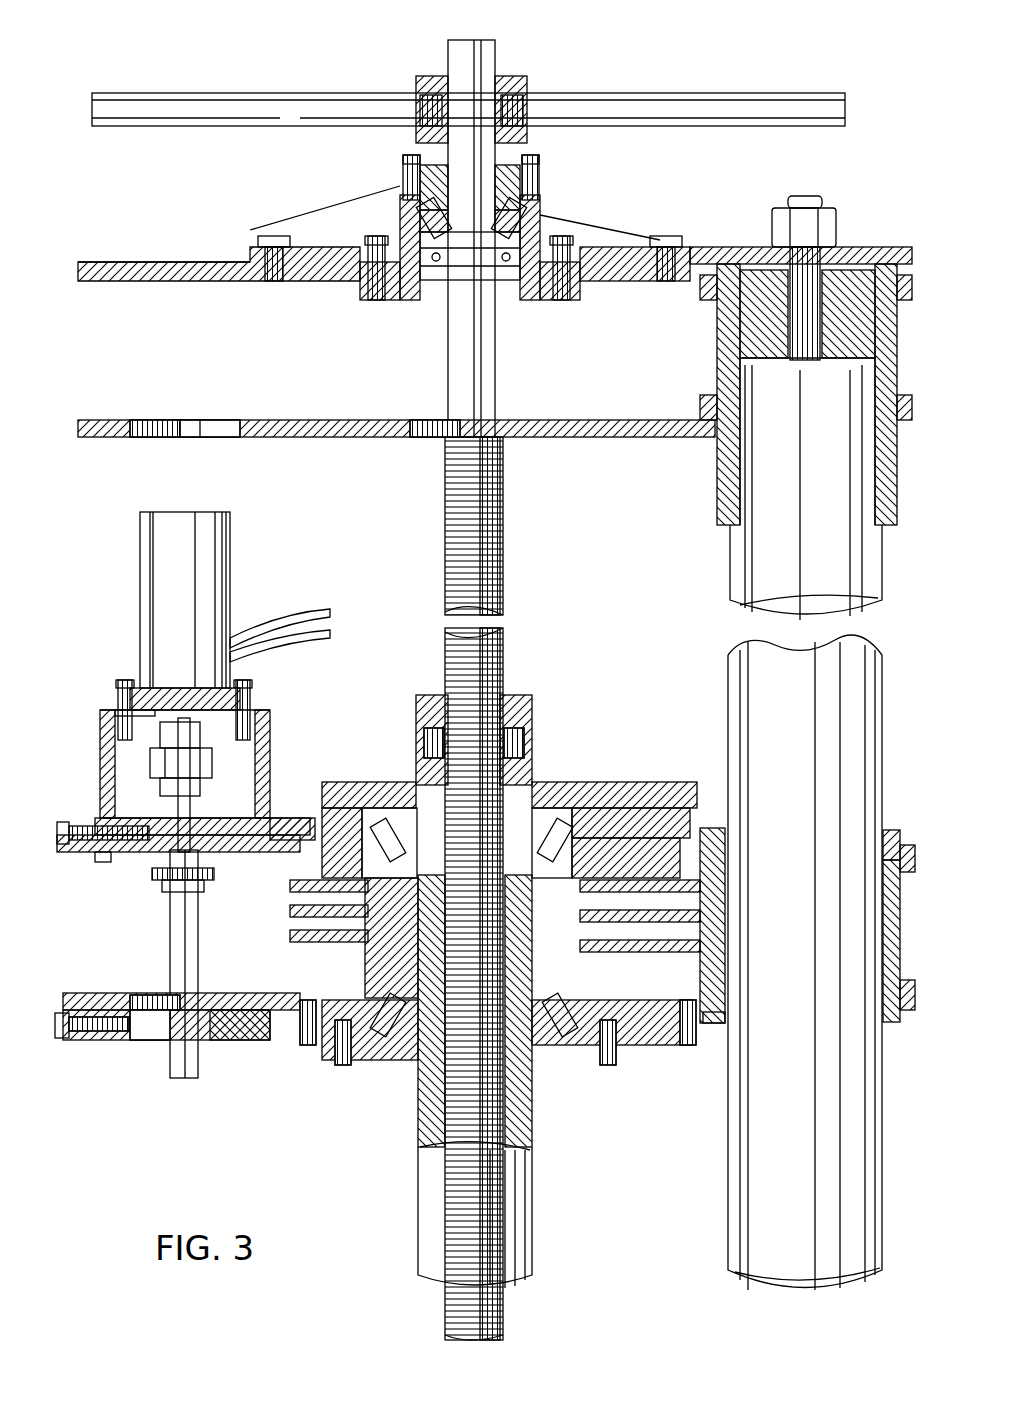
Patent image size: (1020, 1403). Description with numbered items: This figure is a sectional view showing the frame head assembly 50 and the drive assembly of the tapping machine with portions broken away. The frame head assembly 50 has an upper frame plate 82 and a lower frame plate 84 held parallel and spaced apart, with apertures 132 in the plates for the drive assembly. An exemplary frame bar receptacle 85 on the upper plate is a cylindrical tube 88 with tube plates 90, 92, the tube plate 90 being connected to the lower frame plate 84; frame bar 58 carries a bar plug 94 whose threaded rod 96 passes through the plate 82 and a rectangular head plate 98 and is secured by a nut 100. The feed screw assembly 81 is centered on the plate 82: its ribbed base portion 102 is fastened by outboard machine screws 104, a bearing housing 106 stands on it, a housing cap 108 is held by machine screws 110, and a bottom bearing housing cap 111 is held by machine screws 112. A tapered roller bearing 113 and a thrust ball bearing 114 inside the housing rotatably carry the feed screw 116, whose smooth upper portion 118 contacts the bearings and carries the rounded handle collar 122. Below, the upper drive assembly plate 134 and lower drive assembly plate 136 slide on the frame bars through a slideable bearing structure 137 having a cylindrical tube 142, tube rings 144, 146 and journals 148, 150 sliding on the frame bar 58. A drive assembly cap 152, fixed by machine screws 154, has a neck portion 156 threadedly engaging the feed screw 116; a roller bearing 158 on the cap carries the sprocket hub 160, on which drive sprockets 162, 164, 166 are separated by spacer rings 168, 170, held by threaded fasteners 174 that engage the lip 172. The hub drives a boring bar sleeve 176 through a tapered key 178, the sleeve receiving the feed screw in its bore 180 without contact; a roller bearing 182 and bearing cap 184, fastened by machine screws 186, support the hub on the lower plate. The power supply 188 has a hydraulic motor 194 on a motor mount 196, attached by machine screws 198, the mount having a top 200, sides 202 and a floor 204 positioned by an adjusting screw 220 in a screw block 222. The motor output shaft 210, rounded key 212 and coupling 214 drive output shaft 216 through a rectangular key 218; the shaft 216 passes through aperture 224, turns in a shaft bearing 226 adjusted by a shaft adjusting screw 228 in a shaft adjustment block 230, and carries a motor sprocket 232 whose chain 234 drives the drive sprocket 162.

The frame head assembly 50 is at (96, 262).
The frame bar 58 is at (760, 565).
The feed screw assembly 81 is at (292, 222).
The upper frame plate 82 is at (160, 262).
The lower frame plate 84 is at (100, 428).
The frame bar receptacle 85 is at (722, 368).
The cylindrical tube 88 is at (885, 335).
The tube plate 90 is at (705, 296).
The tube plate 92 is at (705, 405).
The bar plug 94 is at (748, 340).
The threaded rod 96 is at (820, 200).
The rectangular head plate 98 is at (750, 247).
The nut 100 is at (780, 212).
The ribbed base portion 102 is at (545, 215).
The outboard machine screws 104 is at (268, 238).
The bearing housing 106 is at (402, 200).
The housing cap 108 is at (545, 187).
The machine screws 110 is at (408, 155).
The bottom bearing housing cap 111 is at (412, 300).
The machine screws 112 is at (376, 300).
The tapered roller bearing 113 is at (527, 212).
The thrust ball bearing 114 is at (412, 232).
The feed screw 116 is at (450, 512).
The smooth upper portion 118 is at (455, 370).
The rounded handle collar 122 is at (432, 78).
The apertures 132 is at (205, 428).
The upper drive assembly plate 134 is at (75, 855).
The lower drive assembly plate 136 is at (75, 995).
The slideable bearing structure 137 is at (712, 830).
The cylindrical tube 142 is at (905, 845).
The tube ring 144 is at (906, 872).
The tube ring 146 is at (906, 982).
The journal 148 is at (896, 830).
The journal 150 is at (722, 1026).
The drive assembly cap 152 is at (392, 790).
The machine screws 154 is at (355, 810).
The neck portion 156 is at (525, 700).
The roller bearing 158 is at (592, 808).
The sprocket hub 160 is at (545, 765).
The drive sprocket 162 is at (300, 895).
The drive sprocket 164 is at (680, 908).
The drive sprocket 166 is at (300, 935).
The spacer ring 168 is at (640, 860).
The spacer ring 170 is at (650, 925).
The lip 172 is at (320, 965).
The threaded fasteners 174 is at (342, 985).
The boring bar sleeve 176 is at (527, 1105).
The tapered key 178 is at (560, 960).
The bore 180 is at (528, 1155).
The roller bearing 182 is at (386, 1062).
The bearing cap 184 is at (635, 1050).
The machine screws 186 is at (308, 1050).
The power supply 188 is at (225, 545).
The hydraulic motor 194 is at (165, 522).
The motor mount 196 is at (290, 718).
The machine screws 198 is at (122, 680).
The top 200 is at (285, 695).
The sides 202 is at (270, 742).
The floor 204 is at (282, 818).
The output shaft 210 is at (190, 700).
The rounded key 212 is at (115, 718).
The coupling 214 is at (150, 762).
The output shaft 216 is at (185, 938).
The rectangular key 218 is at (160, 790).
The adjusting screw 220 is at (100, 862).
The screw block 222 is at (72, 818).
The aperture 224 is at (160, 995).
The shaft bearing 226 is at (240, 1042).
The shaft adjusting screw 228 is at (112, 1042).
The shaft adjustment block 230 is at (82, 1042).
The motor sprocket 232 is at (165, 892).
The chain 234 is at (165, 876).